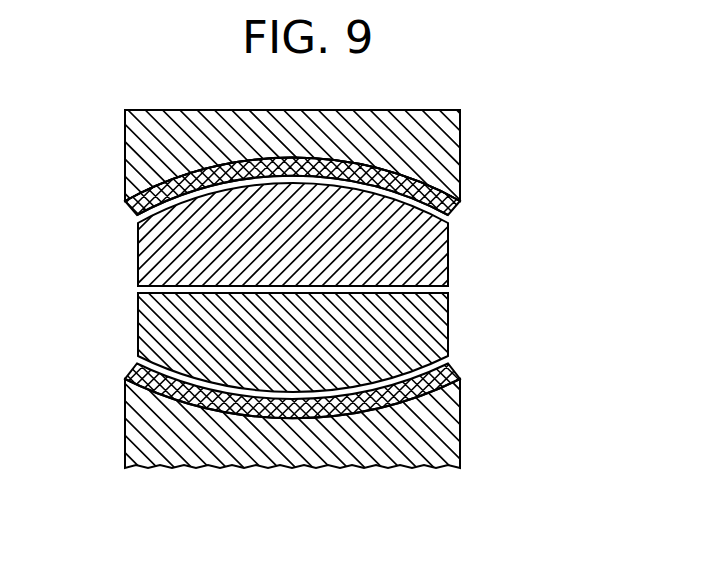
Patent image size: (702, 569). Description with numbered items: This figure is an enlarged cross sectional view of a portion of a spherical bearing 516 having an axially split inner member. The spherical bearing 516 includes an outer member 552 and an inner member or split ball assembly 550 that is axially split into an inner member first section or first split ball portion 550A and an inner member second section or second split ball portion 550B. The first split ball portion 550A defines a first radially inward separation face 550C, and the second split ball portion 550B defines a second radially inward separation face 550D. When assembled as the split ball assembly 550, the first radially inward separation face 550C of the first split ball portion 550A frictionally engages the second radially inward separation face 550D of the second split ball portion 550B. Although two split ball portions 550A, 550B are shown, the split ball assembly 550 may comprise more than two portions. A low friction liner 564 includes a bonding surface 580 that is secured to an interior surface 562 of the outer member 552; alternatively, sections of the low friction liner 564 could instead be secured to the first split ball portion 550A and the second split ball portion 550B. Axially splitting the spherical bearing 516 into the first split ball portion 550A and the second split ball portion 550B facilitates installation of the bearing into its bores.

The spherical bearing 516 is at (493, 122).
The outer member 552 is at (460, 166).
The low friction liner 564 is at (132, 206).
The bonding surface 580 is at (187, 174).
The interior surface 562 is at (362, 163).
The split ball assembly 550 is at (464, 280).
The first split ball portion 550A is at (447, 228).
The second split ball portion 550B is at (448, 314).
The first radially inward separation face 550C is at (165, 286).
The second radially inward separation face 550D is at (189, 293).